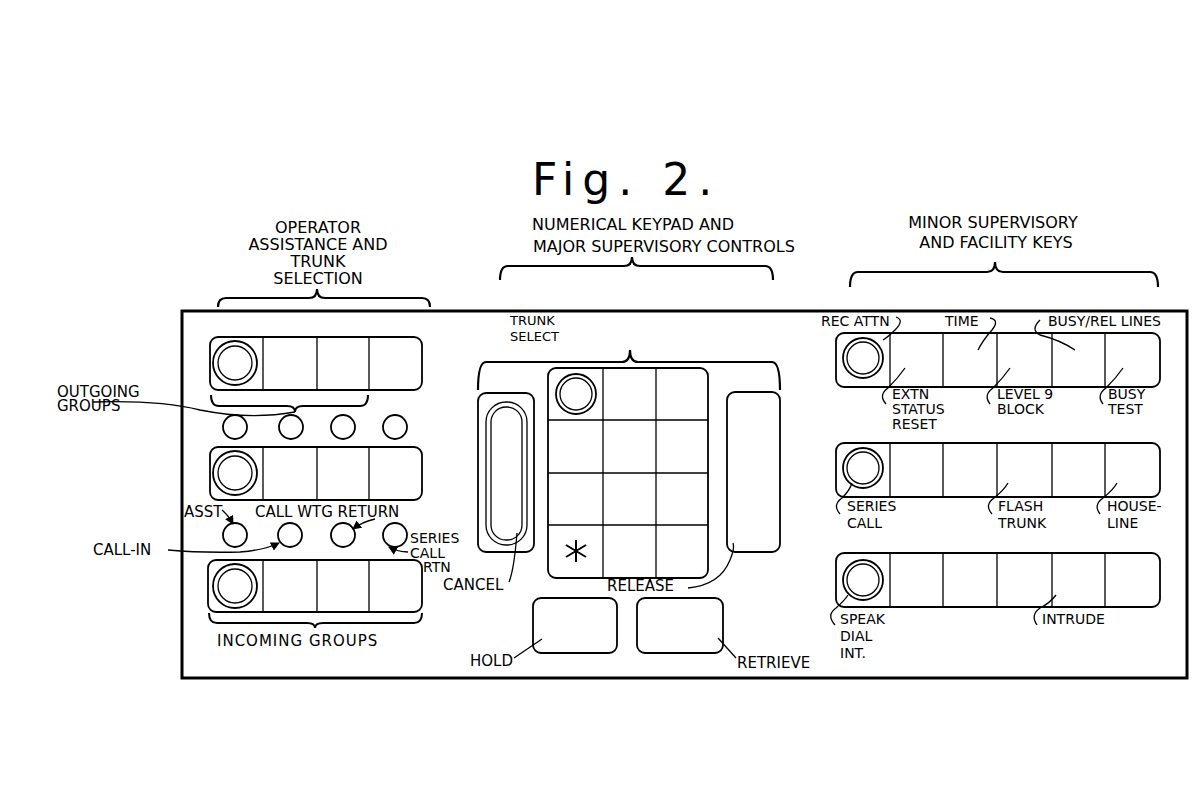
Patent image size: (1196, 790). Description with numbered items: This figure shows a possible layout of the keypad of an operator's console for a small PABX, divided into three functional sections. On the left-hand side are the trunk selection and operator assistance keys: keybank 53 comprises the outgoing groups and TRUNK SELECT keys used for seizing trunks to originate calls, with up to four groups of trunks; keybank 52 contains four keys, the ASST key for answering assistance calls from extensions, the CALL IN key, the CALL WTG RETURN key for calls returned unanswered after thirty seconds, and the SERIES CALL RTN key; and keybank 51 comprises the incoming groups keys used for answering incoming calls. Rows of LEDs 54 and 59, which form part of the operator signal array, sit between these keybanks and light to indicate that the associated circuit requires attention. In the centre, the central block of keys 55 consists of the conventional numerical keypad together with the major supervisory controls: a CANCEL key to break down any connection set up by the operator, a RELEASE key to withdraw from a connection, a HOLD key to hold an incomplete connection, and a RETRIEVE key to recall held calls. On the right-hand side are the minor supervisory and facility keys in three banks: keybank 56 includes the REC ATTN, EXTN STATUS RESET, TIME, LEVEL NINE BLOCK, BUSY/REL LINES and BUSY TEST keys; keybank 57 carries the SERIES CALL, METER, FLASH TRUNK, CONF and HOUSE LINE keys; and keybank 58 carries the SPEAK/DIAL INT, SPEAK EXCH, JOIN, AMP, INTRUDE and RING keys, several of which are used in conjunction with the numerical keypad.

The keybank of incoming groups keys 51 is at (427, 589).
The keybank of assistance keys 52 is at (428, 474).
The keybank of outgoing groups and trunk select keys 53 is at (425, 348).
The array of LEDs 54 is at (409, 526).
The central block of keys 55 is at (632, 348).
The keybank of facility keys 56 is at (834, 353).
The keybank of facility keys 57 is at (833, 482).
The keybank of facility keys 58 is at (832, 585).
The array of LEDs 59 is at (411, 417).